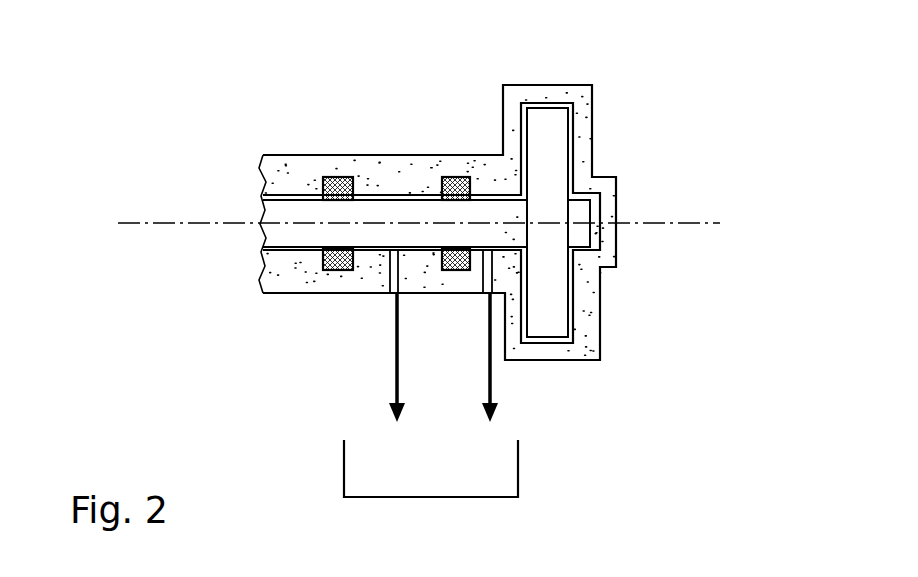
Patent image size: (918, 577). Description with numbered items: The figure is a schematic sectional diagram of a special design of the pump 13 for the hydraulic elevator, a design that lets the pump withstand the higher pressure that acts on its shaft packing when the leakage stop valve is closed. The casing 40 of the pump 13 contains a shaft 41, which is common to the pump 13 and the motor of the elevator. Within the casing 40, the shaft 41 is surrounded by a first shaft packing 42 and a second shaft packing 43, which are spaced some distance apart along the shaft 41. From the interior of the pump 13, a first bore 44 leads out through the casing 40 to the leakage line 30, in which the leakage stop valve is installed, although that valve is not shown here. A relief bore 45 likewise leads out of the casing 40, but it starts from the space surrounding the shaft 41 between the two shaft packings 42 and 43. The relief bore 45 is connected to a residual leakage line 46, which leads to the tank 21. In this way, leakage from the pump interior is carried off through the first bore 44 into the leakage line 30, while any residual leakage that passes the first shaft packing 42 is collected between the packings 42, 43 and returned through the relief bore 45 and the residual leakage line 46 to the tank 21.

The pump 13 is at (630, 102).
The casing 40 is at (391, 165).
The shaft 41 is at (293, 230).
The first shaft packing 42 is at (452, 177).
The second shaft packing 43 is at (322, 177).
The first bore 44 is at (488, 270).
The relief bore 45 is at (392, 268).
The residual leakage line 46 is at (397, 373).
The leakage line 30 is at (493, 376).
The tank 21 is at (380, 462).